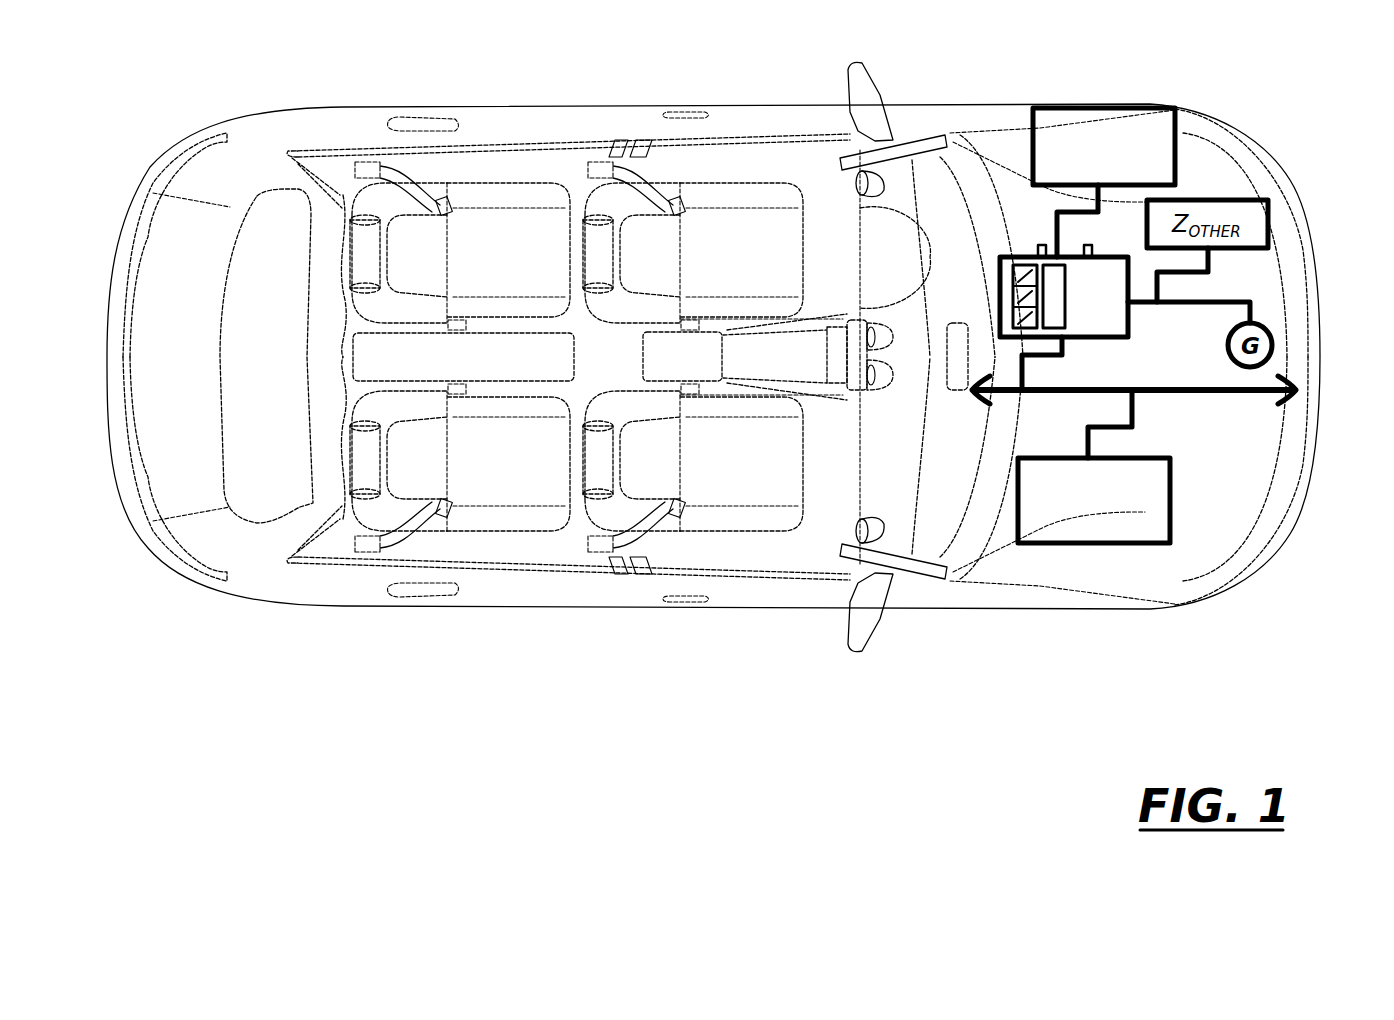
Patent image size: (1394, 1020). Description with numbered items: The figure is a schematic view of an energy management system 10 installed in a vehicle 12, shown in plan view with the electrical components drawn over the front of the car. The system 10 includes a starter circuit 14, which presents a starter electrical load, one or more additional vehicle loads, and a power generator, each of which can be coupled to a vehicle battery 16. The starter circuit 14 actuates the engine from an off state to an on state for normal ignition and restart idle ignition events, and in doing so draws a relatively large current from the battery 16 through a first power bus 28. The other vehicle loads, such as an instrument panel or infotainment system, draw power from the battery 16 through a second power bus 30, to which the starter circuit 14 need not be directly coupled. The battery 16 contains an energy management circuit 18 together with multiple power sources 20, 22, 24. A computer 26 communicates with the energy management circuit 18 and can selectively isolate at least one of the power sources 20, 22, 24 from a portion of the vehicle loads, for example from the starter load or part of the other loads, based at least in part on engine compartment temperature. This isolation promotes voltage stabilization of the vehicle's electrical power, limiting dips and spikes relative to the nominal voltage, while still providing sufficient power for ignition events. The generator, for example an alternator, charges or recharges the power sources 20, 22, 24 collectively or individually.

The energy management system 10 is at (737, 352).
The vehicle 12 is at (874, 68).
The starter circuit 14 is at (1121, 146).
The vehicle battery 16 is at (1065, 291).
The energy management circuit 18 is at (1058, 288).
The power source 20 is at (1016, 272).
The power source 22 is at (1016, 291).
The power source 24 is at (1016, 311).
The computer 26 is at (1108, 520).
The first power bus 28 is at (1046, 226).
The second power bus 30 is at (1160, 286).